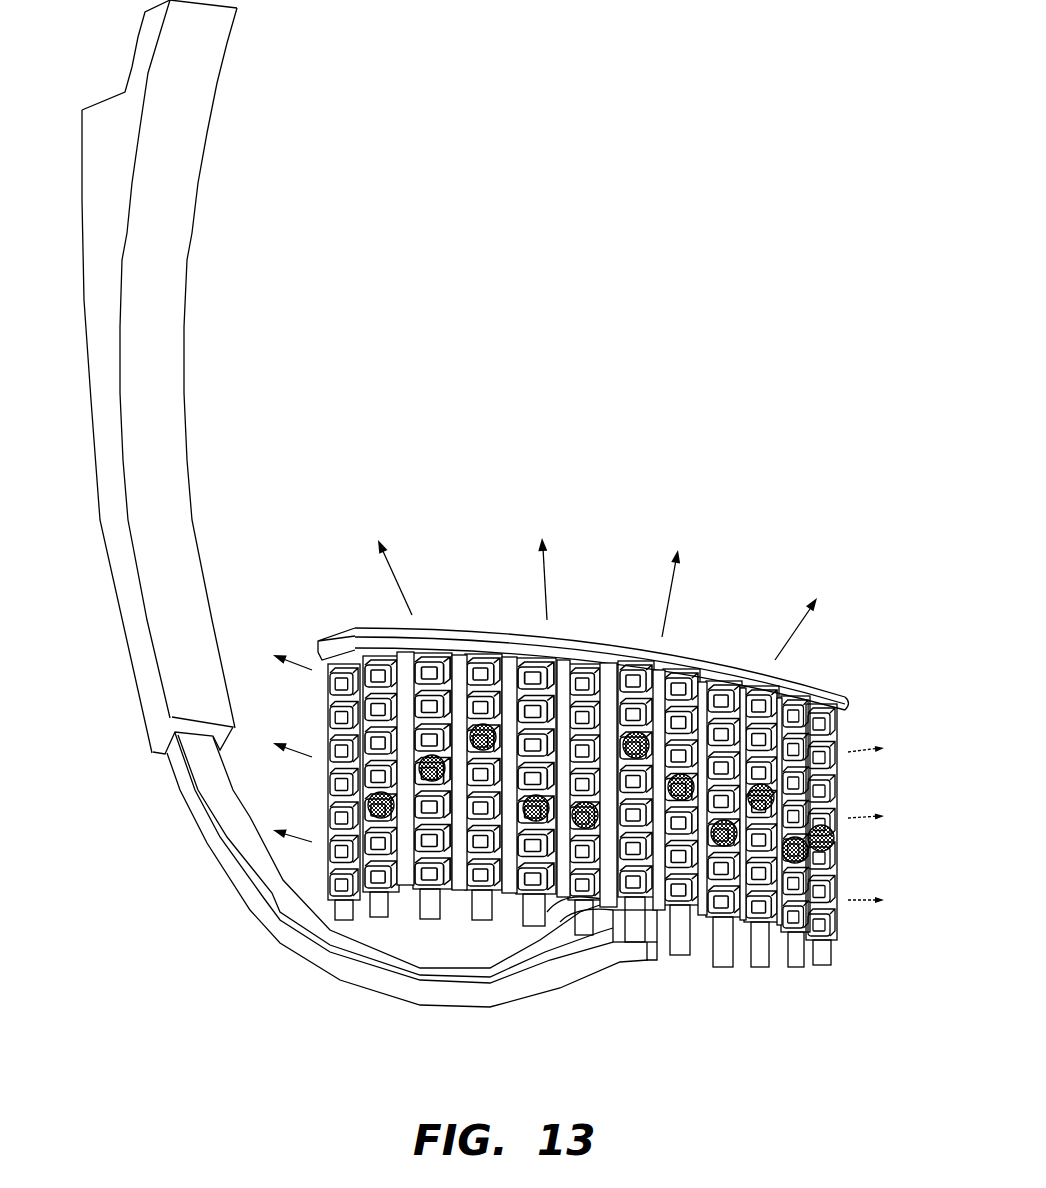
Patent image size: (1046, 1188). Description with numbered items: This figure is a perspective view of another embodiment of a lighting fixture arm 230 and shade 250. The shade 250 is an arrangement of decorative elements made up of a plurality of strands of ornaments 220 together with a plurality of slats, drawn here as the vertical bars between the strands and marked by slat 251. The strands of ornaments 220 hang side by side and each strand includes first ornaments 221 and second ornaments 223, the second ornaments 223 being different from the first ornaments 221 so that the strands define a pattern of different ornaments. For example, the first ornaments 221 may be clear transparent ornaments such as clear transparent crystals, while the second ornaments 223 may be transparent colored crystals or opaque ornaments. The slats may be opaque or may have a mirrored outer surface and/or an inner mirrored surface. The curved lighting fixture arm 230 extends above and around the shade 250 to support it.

The strands of ornaments 220 is at (856, 938).
The first ornaments 221 is at (832, 731).
The second ornaments 223 is at (832, 830).
The lighting fixture arm 230 is at (212, 366).
The shade 250 is at (740, 612).
The spacer bar 251 is at (460, 670).